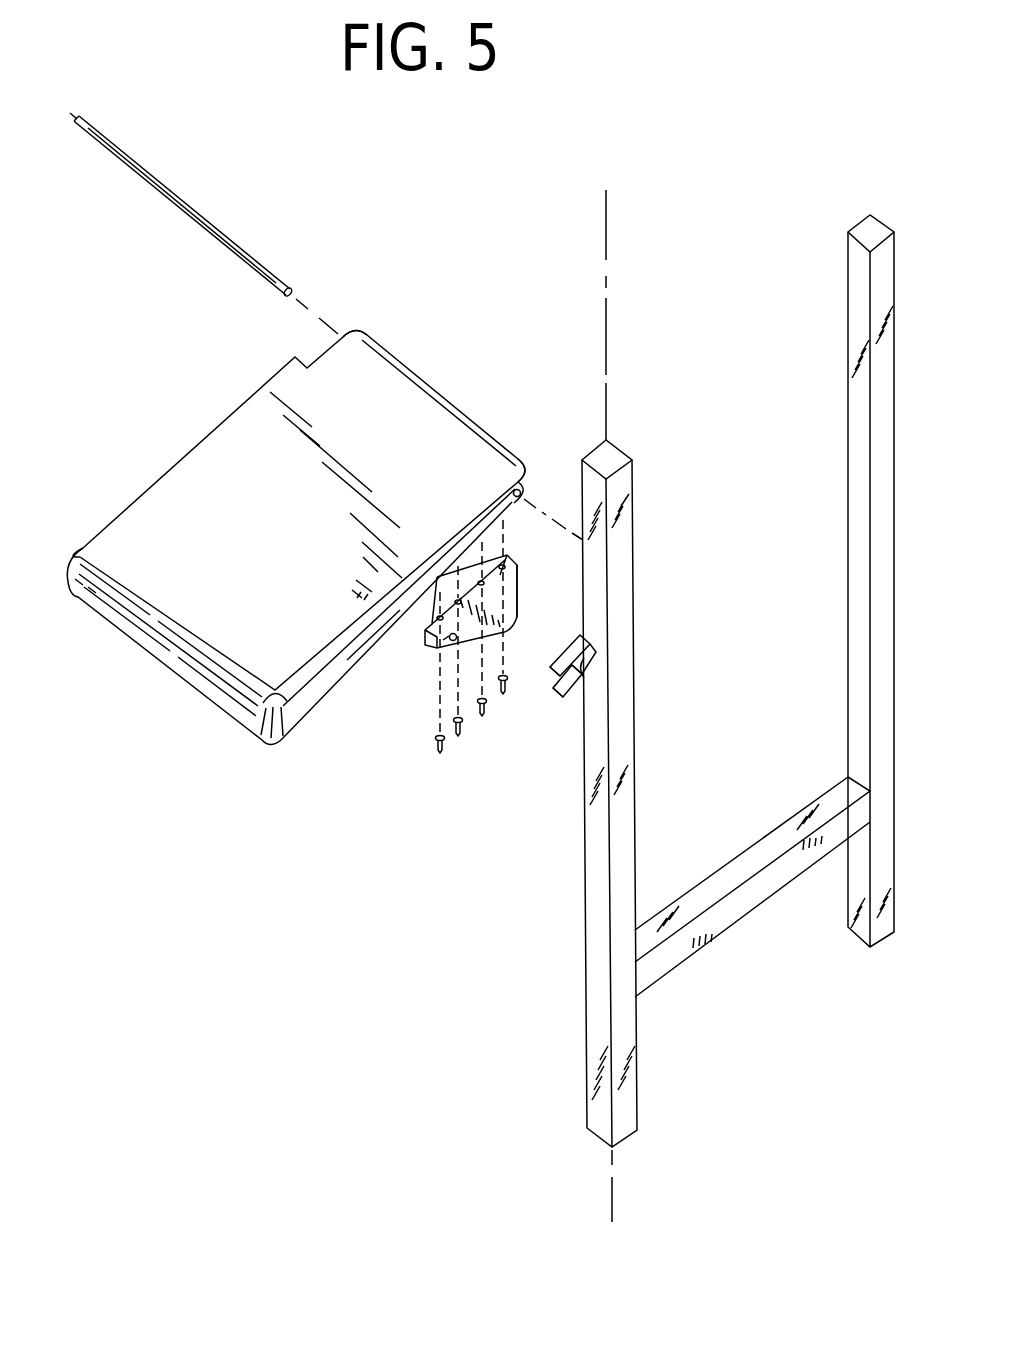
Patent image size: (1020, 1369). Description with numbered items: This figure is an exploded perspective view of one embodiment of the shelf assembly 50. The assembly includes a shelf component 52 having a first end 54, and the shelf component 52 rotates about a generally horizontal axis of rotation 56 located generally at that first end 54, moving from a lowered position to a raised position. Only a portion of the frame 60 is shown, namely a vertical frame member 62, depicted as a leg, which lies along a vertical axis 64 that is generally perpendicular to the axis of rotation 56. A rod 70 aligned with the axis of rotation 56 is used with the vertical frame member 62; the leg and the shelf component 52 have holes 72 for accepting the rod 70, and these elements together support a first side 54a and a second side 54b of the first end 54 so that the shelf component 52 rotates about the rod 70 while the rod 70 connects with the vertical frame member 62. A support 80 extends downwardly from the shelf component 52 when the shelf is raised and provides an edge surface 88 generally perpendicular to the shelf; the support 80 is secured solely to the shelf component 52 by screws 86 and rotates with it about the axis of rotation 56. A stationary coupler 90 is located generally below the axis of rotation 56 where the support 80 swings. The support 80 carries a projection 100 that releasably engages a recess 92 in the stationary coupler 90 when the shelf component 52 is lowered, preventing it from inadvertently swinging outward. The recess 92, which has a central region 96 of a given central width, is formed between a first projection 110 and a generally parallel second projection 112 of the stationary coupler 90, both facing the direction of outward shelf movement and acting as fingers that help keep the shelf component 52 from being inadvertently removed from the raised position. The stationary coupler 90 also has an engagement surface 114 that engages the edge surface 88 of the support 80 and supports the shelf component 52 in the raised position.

The shelf assembly 50 is at (474, 328).
The shelf component 52 is at (167, 472).
The first end 54 is at (482, 447).
The first side 54a is at (513, 483).
The second side 54b is at (364, 336).
The axis of rotation 56 is at (316, 320).
The frame 60 is at (759, 916).
The vertical frame member 62 is at (583, 834).
The vertical axis 64 is at (606, 220).
The rod 70 is at (221, 229).
The holes 72 is at (517, 498).
The support 80 is at (500, 617).
The screws 86 is at (458, 742).
The edge surface 88 is at (522, 597).
The stationary coupler 90 is at (575, 652).
The recess 92 is at (545, 691).
The central region 96 is at (503, 694).
The projection 100 is at (436, 642).
The first projection 110 is at (572, 697).
The second projection 112 is at (554, 668).
The engagement surface 114 is at (582, 668).